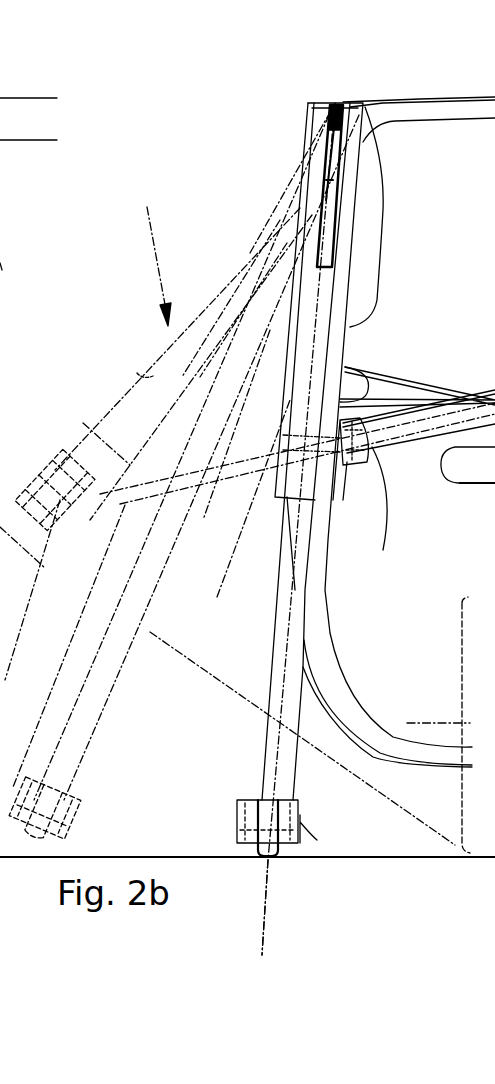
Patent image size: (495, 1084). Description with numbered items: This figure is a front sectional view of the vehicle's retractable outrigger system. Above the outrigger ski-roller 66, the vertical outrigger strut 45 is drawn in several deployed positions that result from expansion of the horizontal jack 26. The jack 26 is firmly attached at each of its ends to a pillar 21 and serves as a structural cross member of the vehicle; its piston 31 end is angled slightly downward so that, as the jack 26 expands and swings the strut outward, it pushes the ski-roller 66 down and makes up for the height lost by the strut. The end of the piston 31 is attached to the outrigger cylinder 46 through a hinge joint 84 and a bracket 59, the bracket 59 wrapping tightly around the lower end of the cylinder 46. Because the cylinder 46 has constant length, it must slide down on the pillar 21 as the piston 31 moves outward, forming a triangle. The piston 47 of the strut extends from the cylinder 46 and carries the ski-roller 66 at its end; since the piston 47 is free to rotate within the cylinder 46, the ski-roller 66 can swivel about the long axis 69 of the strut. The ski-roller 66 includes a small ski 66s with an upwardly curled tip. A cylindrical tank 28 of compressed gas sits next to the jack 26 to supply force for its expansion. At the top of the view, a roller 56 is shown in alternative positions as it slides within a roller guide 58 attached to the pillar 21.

The pillar 21 is at (378, 247).
The horizontal jack 26 is at (383, 548).
The cylindrical tank 28 is at (453, 487).
The piston end 31 is at (302, 622).
The outrigger strut 45 is at (151, 260).
The cylinder 46 is at (137, 373).
The piston 47 is at (112, 700).
The roller 56 is at (0, 83).
The roller guide 58 is at (0, 170).
The bracket 59 is at (83, 423).
The outrigger ski-roller 66 is at (237, 820).
The ski 66s is at (317, 840).
The long axis 69 is at (262, 910).
The hinge joint 84 is at (115, 576).